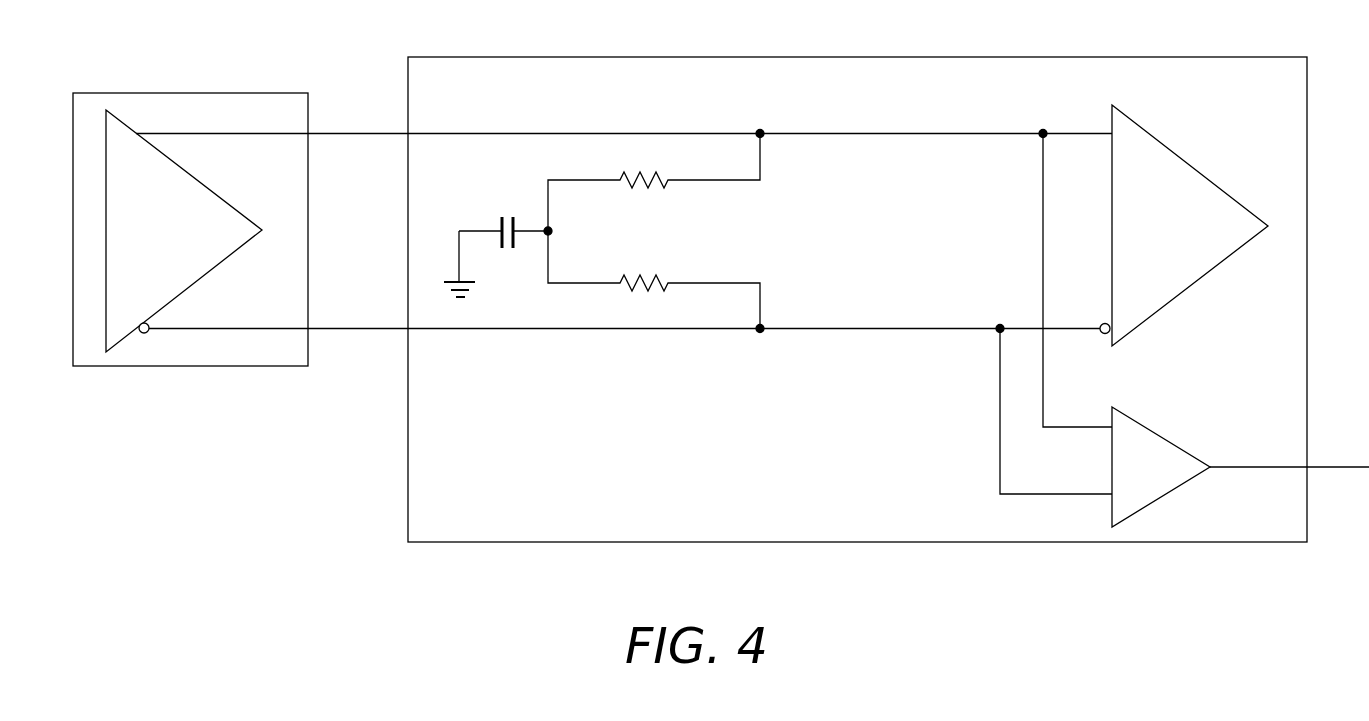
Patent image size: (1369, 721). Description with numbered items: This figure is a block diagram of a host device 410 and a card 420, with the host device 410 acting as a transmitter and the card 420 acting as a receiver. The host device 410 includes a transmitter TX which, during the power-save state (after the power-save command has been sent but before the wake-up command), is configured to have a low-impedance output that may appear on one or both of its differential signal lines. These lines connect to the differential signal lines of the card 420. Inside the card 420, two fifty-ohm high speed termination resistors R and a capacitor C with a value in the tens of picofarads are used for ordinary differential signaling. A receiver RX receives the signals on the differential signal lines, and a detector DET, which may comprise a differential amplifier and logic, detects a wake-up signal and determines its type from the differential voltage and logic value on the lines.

The host device 410 is at (190, 240).
The card 420 is at (888, 310).
The transmitter TX is at (192, 366).
The receiver RX is at (1184, 225).
The detector DET is at (1161, 467).
The resistors R is at (654, 231).
The capacitor C is at (503, 247).